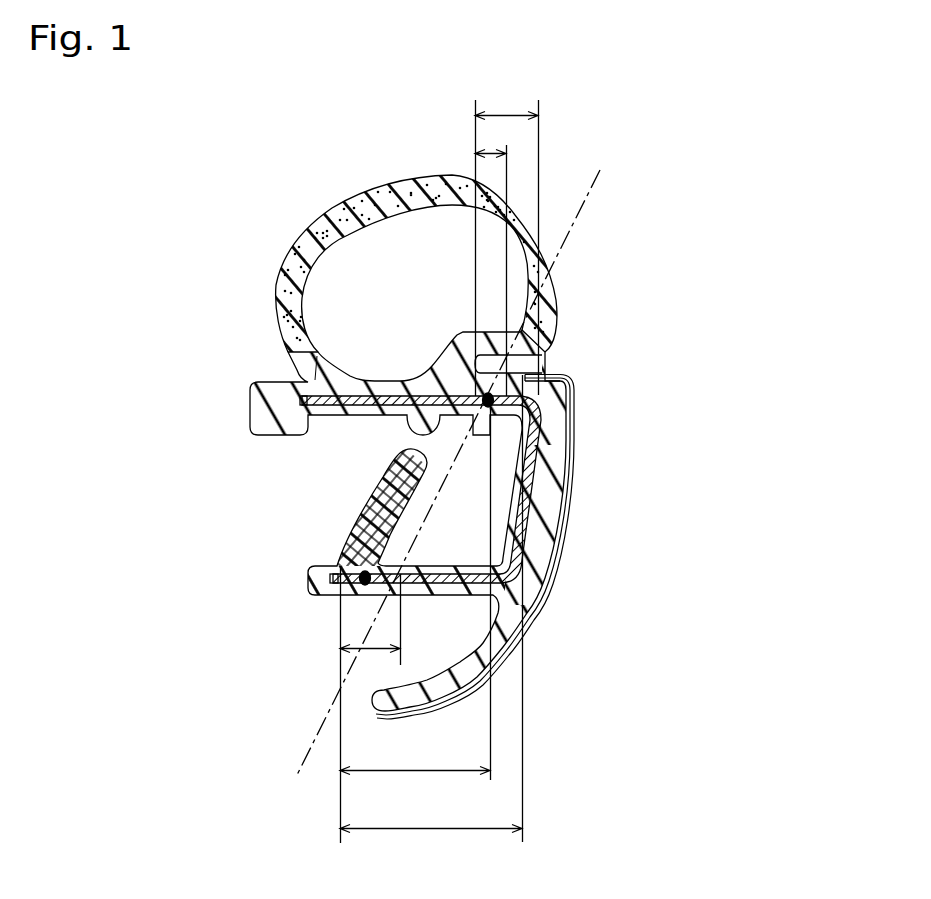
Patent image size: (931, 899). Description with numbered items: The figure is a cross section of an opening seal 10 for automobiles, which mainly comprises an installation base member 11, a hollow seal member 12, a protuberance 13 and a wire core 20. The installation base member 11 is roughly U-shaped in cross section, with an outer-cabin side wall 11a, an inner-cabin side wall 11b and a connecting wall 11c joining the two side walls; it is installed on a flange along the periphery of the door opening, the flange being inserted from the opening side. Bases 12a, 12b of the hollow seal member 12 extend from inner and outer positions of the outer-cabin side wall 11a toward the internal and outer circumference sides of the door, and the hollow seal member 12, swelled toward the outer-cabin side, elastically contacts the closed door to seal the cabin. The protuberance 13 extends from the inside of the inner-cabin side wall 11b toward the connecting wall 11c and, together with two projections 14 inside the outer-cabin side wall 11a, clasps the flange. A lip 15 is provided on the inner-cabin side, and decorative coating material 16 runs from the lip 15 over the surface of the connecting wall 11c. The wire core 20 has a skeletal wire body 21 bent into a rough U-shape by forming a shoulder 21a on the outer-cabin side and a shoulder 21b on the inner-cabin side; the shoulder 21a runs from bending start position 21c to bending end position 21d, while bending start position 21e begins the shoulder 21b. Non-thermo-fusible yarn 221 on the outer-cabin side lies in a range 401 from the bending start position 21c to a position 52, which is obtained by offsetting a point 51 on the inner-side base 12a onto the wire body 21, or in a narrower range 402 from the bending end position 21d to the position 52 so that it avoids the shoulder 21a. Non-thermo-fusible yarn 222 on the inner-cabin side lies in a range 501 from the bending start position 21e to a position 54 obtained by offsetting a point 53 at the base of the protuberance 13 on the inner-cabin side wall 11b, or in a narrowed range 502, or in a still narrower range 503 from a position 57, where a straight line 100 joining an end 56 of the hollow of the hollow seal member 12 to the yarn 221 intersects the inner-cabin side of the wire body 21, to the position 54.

The opening seal for automobiles 10 is at (666, 166).
The straight line 100 is at (588, 214).
The installation base member 11 is at (550, 512).
The outer-cabin side wall 11a is at (305, 422).
The inner-cabin side wall 11b is at (445, 598).
The connecting wall 11c is at (553, 480).
The hollow seal member 12 is at (327, 222).
The inner-side base of the hollow seal member 12a is at (463, 330).
The outer-side base of the hollow seal member 12b is at (312, 350).
The protuberance 13 is at (383, 495).
The projections 14 is at (408, 424).
The lip 15 is at (437, 685).
The decorative coating material 16 is at (566, 538).
The wire core 20 is at (317, 373).
The wire body 21 is at (350, 415).
The shoulder on the outer-cabin side 21a is at (572, 402).
The shoulder on the inner-cabin side 21b is at (548, 590).
The bending start position forming the shoulder on the outer-cabin side 21c is at (553, 433).
The bending end position forming the shoulder on the outer-cabin side 21d is at (545, 380).
The bending start position forming the shoulder on the inner-cabin side 21e is at (547, 557).
The non-thermo-fusible yarn on the outer-cabin side 221 is at (462, 370).
The non-thermo-fusible yarn on the inner-cabin side 222 is at (358, 552).
The point on the door internal circumference side of the inner-side base 51 is at (482, 392).
The position determined by offsetting point 51 52 is at (470, 382).
The point on the opening edge side of the base of the protuberance 53 is at (313, 568).
The position determined by offsetting point 53 54 is at (330, 581).
The end on the door internal circumference side on the hollow side of the hollow sea 56 is at (522, 322).
The position where straight line 100 intersects the inner-cabin side of the wire bod 57 is at (400, 586).
The range 401 is at (506, 104).
The range 402 is at (491, 140).
The range 501 is at (431, 817).
The range 502 is at (415, 760).
The range 503 is at (366, 650).